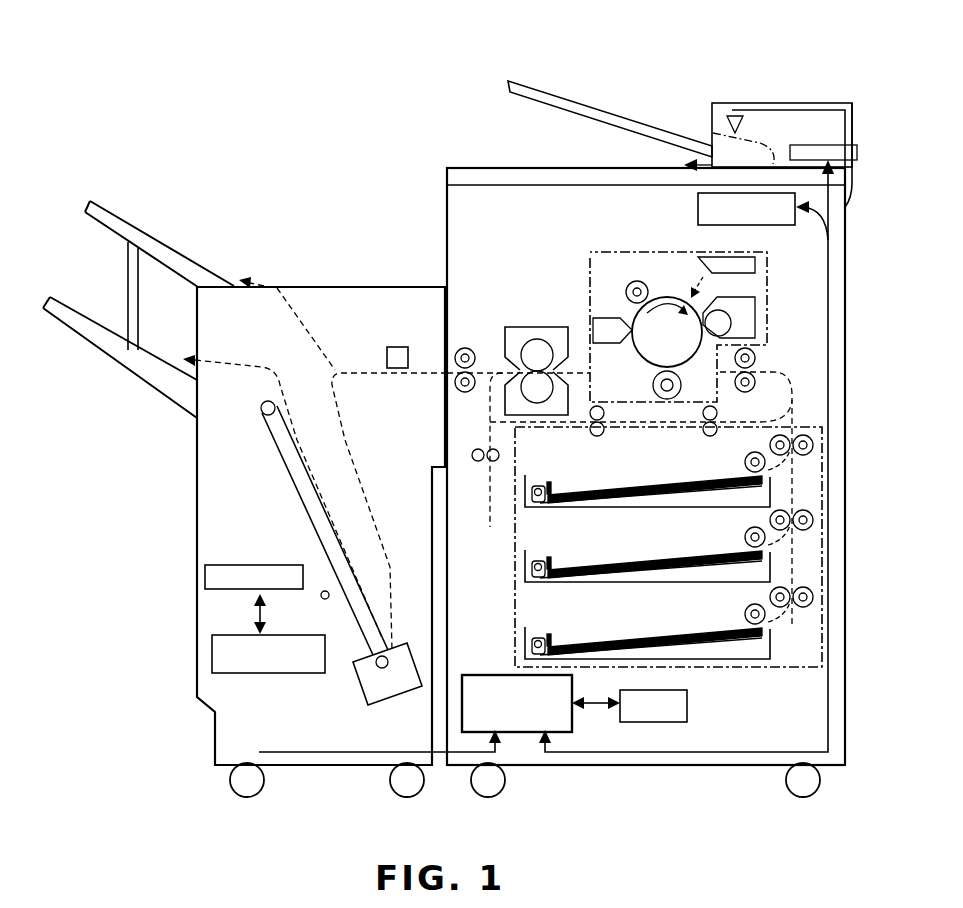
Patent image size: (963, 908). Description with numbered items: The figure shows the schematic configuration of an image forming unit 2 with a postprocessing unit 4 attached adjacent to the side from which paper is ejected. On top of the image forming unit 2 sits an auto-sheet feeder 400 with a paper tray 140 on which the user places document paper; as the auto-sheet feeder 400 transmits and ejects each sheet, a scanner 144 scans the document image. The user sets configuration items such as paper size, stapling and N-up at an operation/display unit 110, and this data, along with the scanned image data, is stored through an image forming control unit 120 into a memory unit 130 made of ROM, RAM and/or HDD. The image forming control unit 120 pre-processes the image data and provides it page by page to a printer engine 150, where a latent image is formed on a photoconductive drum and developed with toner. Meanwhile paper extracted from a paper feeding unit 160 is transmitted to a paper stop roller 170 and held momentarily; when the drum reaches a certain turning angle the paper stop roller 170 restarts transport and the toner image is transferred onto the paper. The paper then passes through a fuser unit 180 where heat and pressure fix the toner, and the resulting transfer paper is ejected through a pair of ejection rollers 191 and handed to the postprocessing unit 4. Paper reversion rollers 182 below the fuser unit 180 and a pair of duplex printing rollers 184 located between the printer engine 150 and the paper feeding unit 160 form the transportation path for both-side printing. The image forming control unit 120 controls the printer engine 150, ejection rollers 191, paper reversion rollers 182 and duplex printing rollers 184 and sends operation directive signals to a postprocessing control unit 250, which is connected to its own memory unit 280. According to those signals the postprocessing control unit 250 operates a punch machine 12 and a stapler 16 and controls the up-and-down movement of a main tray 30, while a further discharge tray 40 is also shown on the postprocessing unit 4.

The image forming unit 2 is at (501, 111).
The postprocessing unit 4 is at (362, 252).
The punch machine 12 is at (396, 347).
The stapler 16 is at (363, 698).
The main tray 30 is at (85, 315).
The upper discharge tray 40 is at (163, 245).
The operation/display unit 110 is at (697, 220).
The image forming control unit 120 is at (478, 674).
The memory unit 130 is at (688, 695).
The paper tray 140 is at (632, 110).
The scanner 144 is at (712, 108).
The printer engine 150 is at (590, 262).
The paper feeding unit 160 is at (515, 556).
The paper stop roller 170 is at (758, 358).
The fuser unit 180 is at (530, 327).
The paper reversion rollers 182 is at (478, 462).
The duplex printing rollers 184 is at (596, 437).
The ejection rollers 191 is at (466, 350).
The postprocessing control unit 250 is at (230, 635).
The memory unit 280 is at (235, 565).
The auto-sheet feeder 400 is at (766, 103).